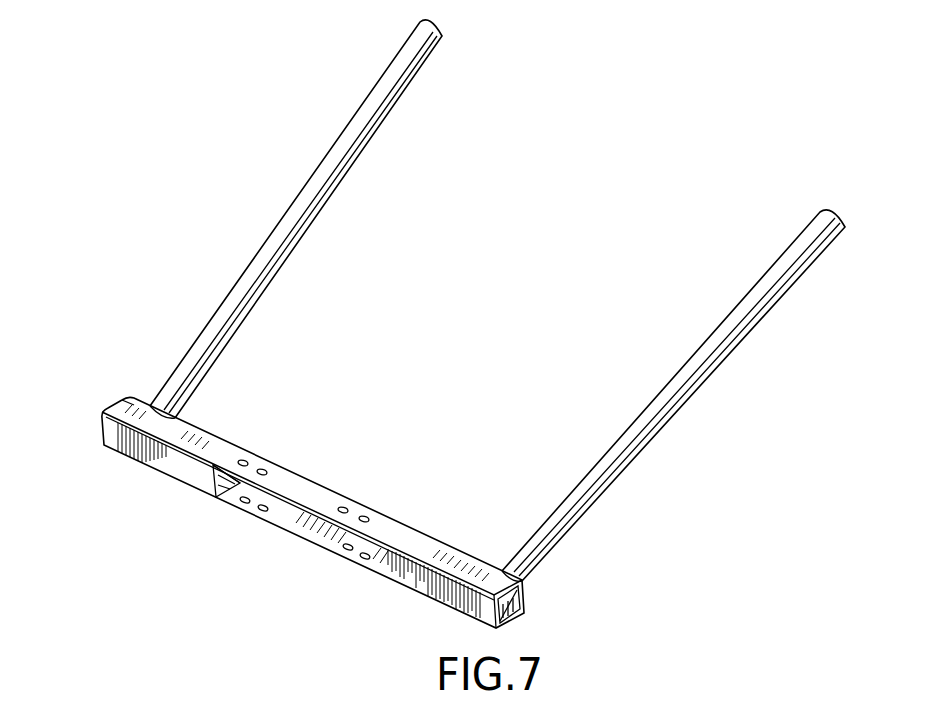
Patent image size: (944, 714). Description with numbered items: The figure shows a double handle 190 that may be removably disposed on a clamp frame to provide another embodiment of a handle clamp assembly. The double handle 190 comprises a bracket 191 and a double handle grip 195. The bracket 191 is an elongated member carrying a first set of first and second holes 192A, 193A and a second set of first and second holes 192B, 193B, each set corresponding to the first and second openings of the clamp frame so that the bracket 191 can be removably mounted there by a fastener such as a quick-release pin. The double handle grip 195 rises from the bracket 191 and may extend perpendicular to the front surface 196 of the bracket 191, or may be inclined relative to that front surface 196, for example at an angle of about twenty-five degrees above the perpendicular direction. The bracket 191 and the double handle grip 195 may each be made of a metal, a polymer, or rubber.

The double handle 190 is at (123, 104).
The bracket 191 is at (122, 398).
The first hole of the first set 192A is at (243, 458).
The first hole of the second set 192B is at (266, 469).
The second hole of the first set 193A is at (345, 506).
The second hole of the second set 193B is at (370, 514).
The double handle grip 195 is at (250, 264).
The front surface 196 is at (527, 596).